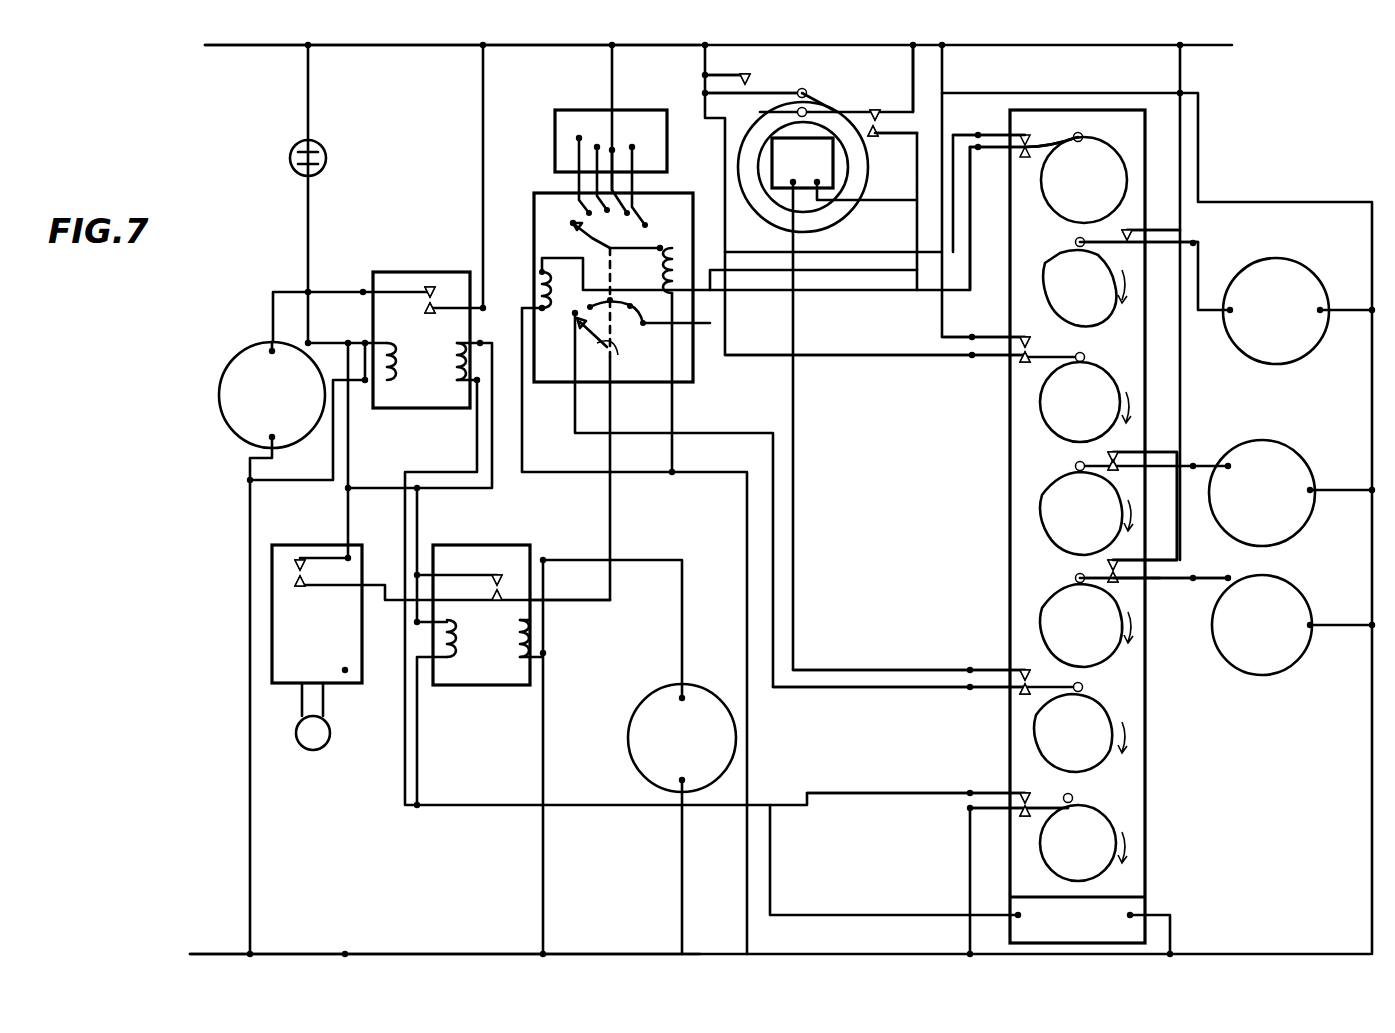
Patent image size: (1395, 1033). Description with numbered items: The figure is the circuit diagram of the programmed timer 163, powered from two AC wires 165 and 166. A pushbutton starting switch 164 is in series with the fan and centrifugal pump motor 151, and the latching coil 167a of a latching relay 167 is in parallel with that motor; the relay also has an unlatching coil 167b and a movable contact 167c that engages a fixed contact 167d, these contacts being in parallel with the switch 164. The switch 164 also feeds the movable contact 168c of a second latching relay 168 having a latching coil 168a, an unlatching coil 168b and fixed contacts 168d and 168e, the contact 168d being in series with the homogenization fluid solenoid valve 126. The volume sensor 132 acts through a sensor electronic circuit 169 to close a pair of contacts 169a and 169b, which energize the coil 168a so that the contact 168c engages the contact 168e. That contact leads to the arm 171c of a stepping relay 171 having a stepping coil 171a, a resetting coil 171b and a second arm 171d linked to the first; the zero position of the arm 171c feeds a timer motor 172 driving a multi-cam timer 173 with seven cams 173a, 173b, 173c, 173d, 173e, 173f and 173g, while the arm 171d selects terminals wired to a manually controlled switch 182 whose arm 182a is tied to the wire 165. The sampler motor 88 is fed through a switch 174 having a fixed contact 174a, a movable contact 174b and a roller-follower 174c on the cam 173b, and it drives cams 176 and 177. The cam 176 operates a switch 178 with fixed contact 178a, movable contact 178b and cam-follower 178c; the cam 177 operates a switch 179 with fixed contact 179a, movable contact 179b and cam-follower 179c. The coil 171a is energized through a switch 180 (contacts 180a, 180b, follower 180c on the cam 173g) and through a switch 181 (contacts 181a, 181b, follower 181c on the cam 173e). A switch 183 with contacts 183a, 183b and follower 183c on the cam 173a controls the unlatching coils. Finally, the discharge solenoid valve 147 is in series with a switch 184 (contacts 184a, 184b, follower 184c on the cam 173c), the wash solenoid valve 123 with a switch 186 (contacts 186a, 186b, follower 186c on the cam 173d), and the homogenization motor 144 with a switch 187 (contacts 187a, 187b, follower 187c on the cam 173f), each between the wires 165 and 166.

The programmed timer 163 is at (262, 125).
The pushbutton starting switch 164 is at (326, 153).
The AC wire 165 is at (215, 47).
The AC wire 166 is at (225, 954).
The fan and centrifugal pump motor 151 is at (220, 398).
The latching relay 167 is at (442, 337).
The latching coil 167a is at (388, 382).
The unlatching coil 167b is at (452, 364).
The movable contact 167c is at (400, 272).
The fixed contact 167d is at (432, 293).
The sensor electronic circuit 169 is at (272, 667).
The contact 169a is at (300, 558).
The contact 169b is at (332, 577).
The volume sensor 132 is at (313, 752).
The second latching relay 168 is at (516, 687).
The latching coil 168a is at (532, 637).
The unlatching coil 168b is at (475, 652).
The movable contact 168c is at (492, 572).
The fixed contact 168d is at (498, 588).
The fixed contact 168e is at (544, 598).
The manually controlled switch 182 is at (555, 141).
The switch arm 182a is at (607, 140).
The stepping relay 171 is at (676, 386).
The stepping coil 171a is at (542, 286).
The resetting coil 171b is at (670, 266).
The arm 171c is at (601, 362).
The arm 171d is at (592, 238).
The switch 179 is at (716, 88).
The fixed contact 179a is at (737, 67).
The movable contact 179b is at (791, 80).
The cam-follower 179c is at (808, 91).
The switch 178 is at (900, 122).
The fixed contact 178a is at (874, 136).
The movable contact 178b is at (880, 112).
The cam-follower 178c is at (790, 109).
The cam 176 is at (867, 102).
The cam 177 is at (842, 222).
The sampler motor 88 is at (772, 178).
The switch 180 is at (989, 161).
The fixed contact 180a is at (996, 218).
The movable contact 180b is at (1003, 210).
The cam-follower 180c is at (1080, 133).
The multi-cam timer 173 is at (1148, 755).
The cam 173a is at (1112, 814).
The cam 173b is at (1110, 706).
The cam 173c is at (1116, 663).
The cam 173d is at (1050, 492).
The cam 173e is at (1120, 382).
The cam 173f is at (1106, 320).
The cam 173g is at (1127, 166).
The timer motor 172 is at (1150, 906).
The switch 187 is at (1150, 238).
The fixed contact 187a is at (1128, 232).
The movable contact 187b is at (1128, 245).
The cam-follower 187c is at (1075, 243).
The homogenization motor 144 is at (1332, 258).
The switch 181 is at (956, 358).
The fixed contact 181a is at (1020, 348).
The movable contact 181b is at (1020, 362).
The cam-follower 181c is at (1106, 356).
The switch 186 is at (1150, 496).
The fixed contact 186a is at (1122, 456).
The movable contact 186b is at (1152, 546).
The cam-follower 186c is at (1075, 466).
The wash solenoid valve 123 is at (1290, 463).
The switch 184 is at (1222, 561).
The fixed contact 184a is at (1122, 566).
The movable contact 184b is at (1140, 580).
The cam-follower 184c is at (1075, 580).
The discharge solenoid valve 147 is at (1300, 596).
The switch 174 is at (961, 690).
The fixed contact 174a is at (1025, 670).
The movable contact 174b is at (1022, 690).
The roller-follower 174c is at (1085, 689).
The switch 183 is at (965, 800).
The fixed contact 183a is at (1025, 793).
The movable contact 183b is at (1022, 809).
The cam-follower 183c is at (1080, 800).
The homogenization fluid solenoid valve 126 is at (689, 699).